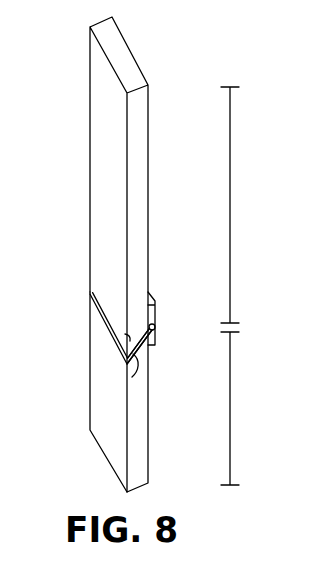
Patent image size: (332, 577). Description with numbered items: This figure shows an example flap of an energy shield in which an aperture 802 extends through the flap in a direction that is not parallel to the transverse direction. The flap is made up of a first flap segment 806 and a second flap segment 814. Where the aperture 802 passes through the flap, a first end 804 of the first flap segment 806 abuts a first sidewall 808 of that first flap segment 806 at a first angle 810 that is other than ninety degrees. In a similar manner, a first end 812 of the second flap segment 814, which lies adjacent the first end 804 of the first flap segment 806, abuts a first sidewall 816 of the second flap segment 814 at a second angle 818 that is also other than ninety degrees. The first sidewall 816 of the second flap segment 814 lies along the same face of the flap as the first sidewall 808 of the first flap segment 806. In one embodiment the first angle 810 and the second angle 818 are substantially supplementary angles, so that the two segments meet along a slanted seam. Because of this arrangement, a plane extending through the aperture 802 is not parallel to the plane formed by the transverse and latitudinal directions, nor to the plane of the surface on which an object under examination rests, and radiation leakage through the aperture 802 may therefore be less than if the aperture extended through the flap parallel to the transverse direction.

The aperture 802 is at (74, 291).
The first end of first flap segment 804 is at (127, 317).
The first flap segment 806 is at (231, 204).
The first sidewall of first flap segment 808 is at (97, 137).
The first angle 810 is at (128, 338).
The first end of second flap segment 812 is at (148, 346).
The second flap segment 814 is at (231, 415).
The first sidewall of second flap segment 816 is at (93, 388).
The second angle 818 is at (137, 368).